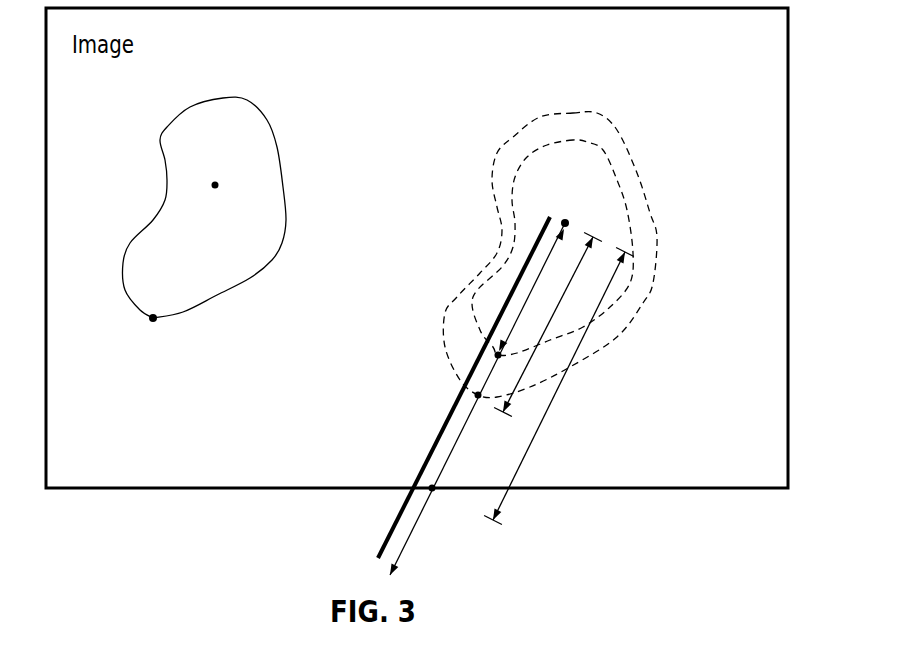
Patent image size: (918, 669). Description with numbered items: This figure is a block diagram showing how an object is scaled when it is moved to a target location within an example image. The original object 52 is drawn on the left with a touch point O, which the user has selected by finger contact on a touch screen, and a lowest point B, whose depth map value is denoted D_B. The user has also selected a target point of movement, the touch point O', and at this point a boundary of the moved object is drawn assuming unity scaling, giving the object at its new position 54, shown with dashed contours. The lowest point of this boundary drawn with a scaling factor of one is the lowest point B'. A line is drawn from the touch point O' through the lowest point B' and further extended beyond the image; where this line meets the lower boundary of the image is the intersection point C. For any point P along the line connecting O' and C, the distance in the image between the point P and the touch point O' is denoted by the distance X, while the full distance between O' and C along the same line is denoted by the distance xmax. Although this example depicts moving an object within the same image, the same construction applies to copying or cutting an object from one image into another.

The object 52 is at (263, 123).
The object at new position 54 is at (607, 118).
The touch point O is at (227, 184).
The lowest point B is at (171, 340).
The touch point of moved object O' is at (578, 212).
The lowest point of moved object boundary B' is at (509, 369).
The point along line P is at (458, 399).
The intersection point C is at (439, 501).
The distance between P and O' X is at (548, 325).
The distance between O' and C xmax is at (559, 386).